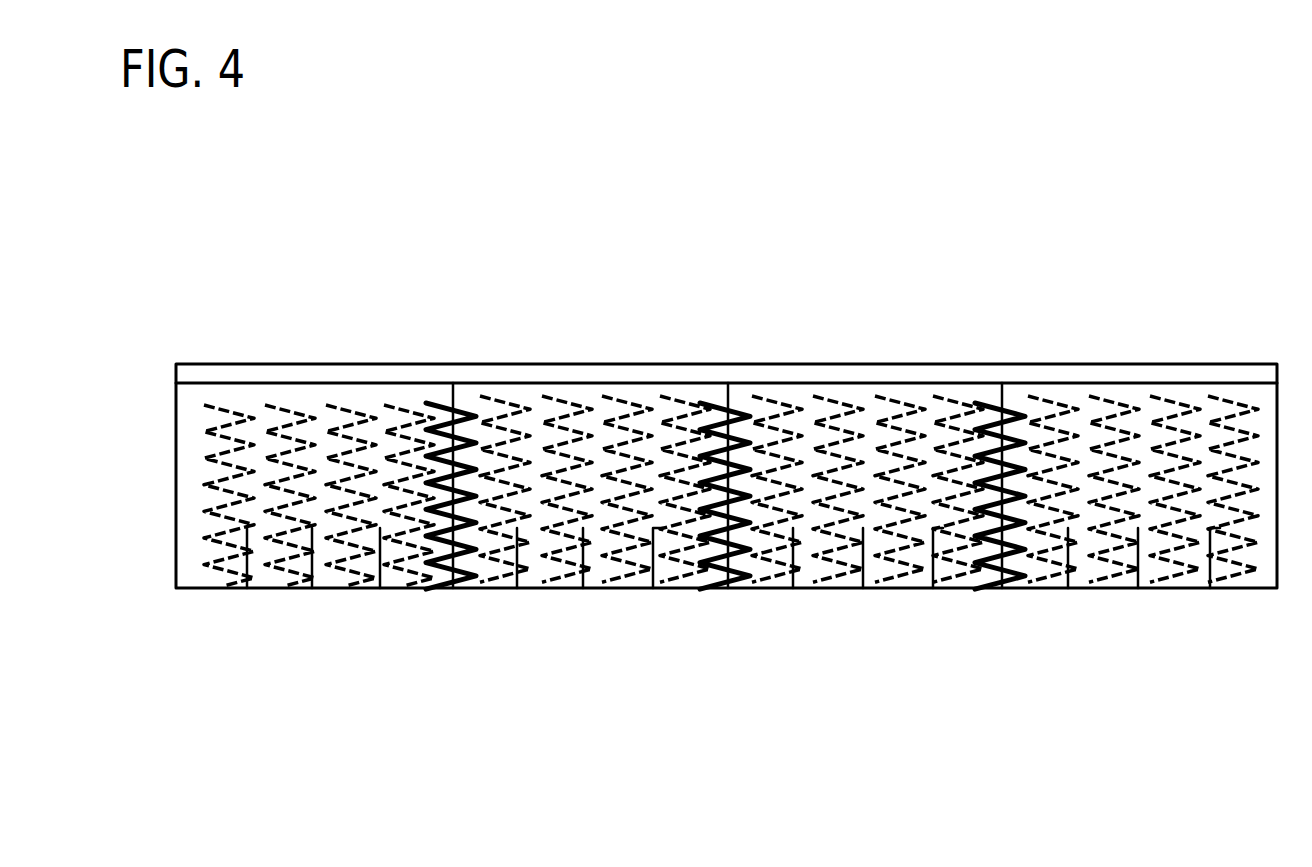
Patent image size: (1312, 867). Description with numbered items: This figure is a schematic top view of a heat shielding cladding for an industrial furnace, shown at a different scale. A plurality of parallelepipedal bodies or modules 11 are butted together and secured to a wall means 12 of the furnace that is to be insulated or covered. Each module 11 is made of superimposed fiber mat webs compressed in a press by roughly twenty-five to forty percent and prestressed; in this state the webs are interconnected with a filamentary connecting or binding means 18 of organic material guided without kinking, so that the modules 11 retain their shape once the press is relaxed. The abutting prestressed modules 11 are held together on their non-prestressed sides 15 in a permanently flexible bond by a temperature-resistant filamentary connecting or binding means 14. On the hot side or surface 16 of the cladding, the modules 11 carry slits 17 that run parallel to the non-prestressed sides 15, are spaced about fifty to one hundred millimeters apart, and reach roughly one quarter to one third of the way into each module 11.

The parallelepipedal bodies or modules 11 is at (1132, 443).
The wall means 12 is at (1235, 372).
The temperature-resistant filamentary connecting or binding means 14 is at (987, 570).
The non-prestressed sides 15 is at (1000, 398).
The hot side or surface 16 is at (563, 588).
The slits 17 is at (383, 587).
The filamentary connecting or binding means of organic material 18 is at (1227, 478).